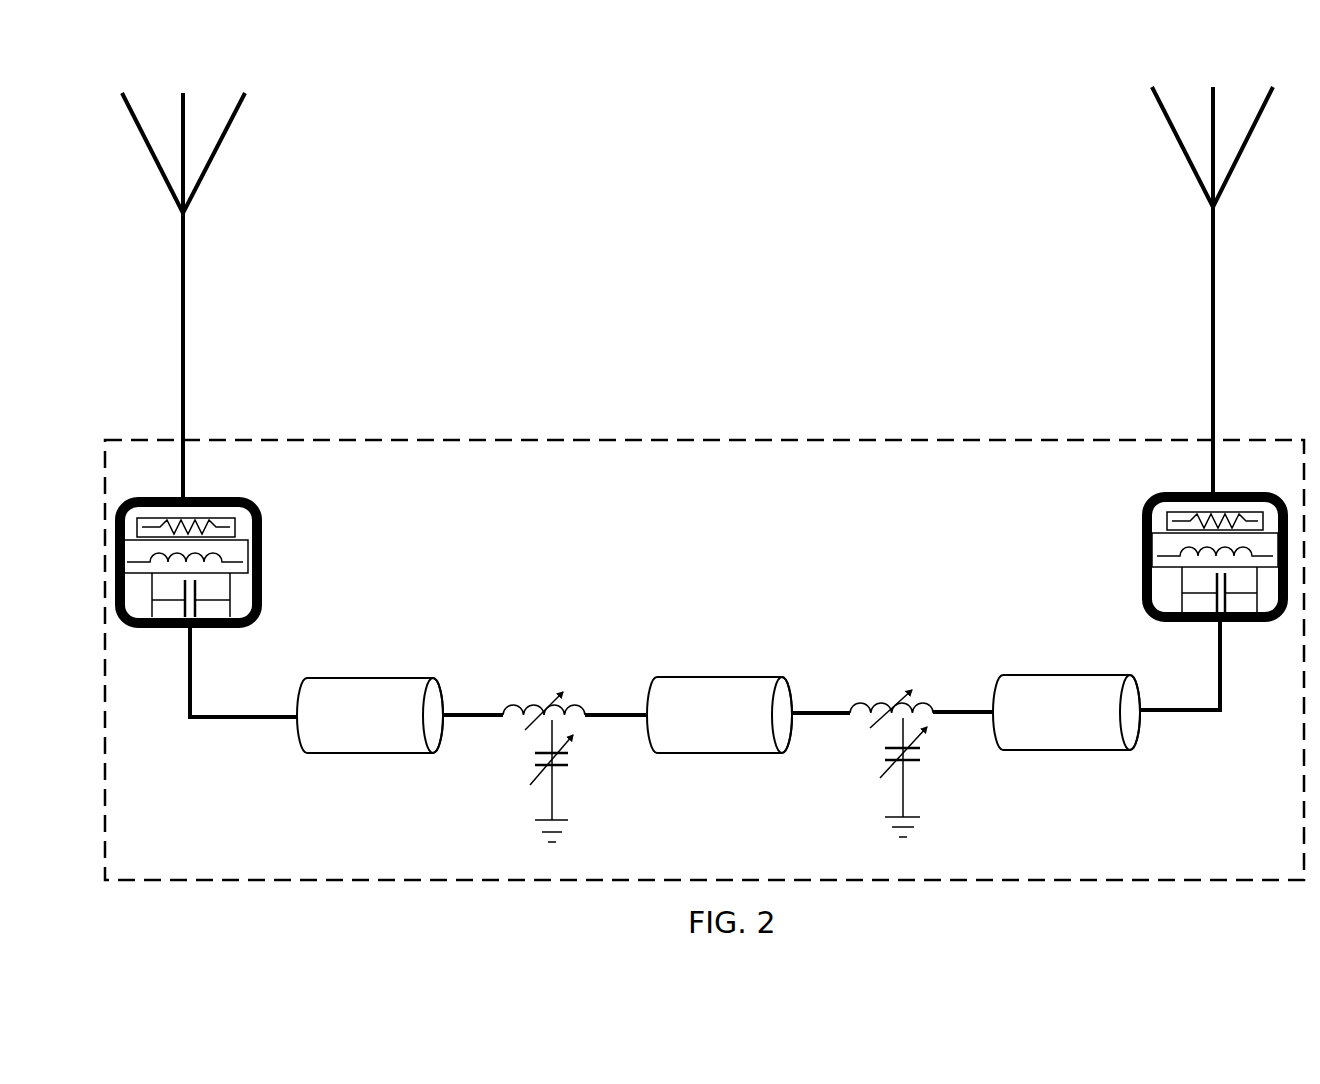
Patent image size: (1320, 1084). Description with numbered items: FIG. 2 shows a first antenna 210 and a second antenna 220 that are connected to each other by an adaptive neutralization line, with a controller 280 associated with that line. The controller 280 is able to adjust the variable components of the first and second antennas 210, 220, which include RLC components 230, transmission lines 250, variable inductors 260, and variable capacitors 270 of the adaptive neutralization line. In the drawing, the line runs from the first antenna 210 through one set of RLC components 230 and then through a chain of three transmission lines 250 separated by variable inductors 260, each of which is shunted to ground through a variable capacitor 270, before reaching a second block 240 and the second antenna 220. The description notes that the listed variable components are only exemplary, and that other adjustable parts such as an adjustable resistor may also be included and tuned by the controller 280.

The first antenna 210 is at (233, 121).
The second antenna 220 is at (1172, 124).
The RLC components 230 is at (263, 562).
The second filter 240 is at (1138, 563).
The transmission lines 250 is at (718, 714).
The variable inductors 260 is at (540, 701).
The variable capacitors 270 is at (528, 768).
The controller 280 is at (718, 434).